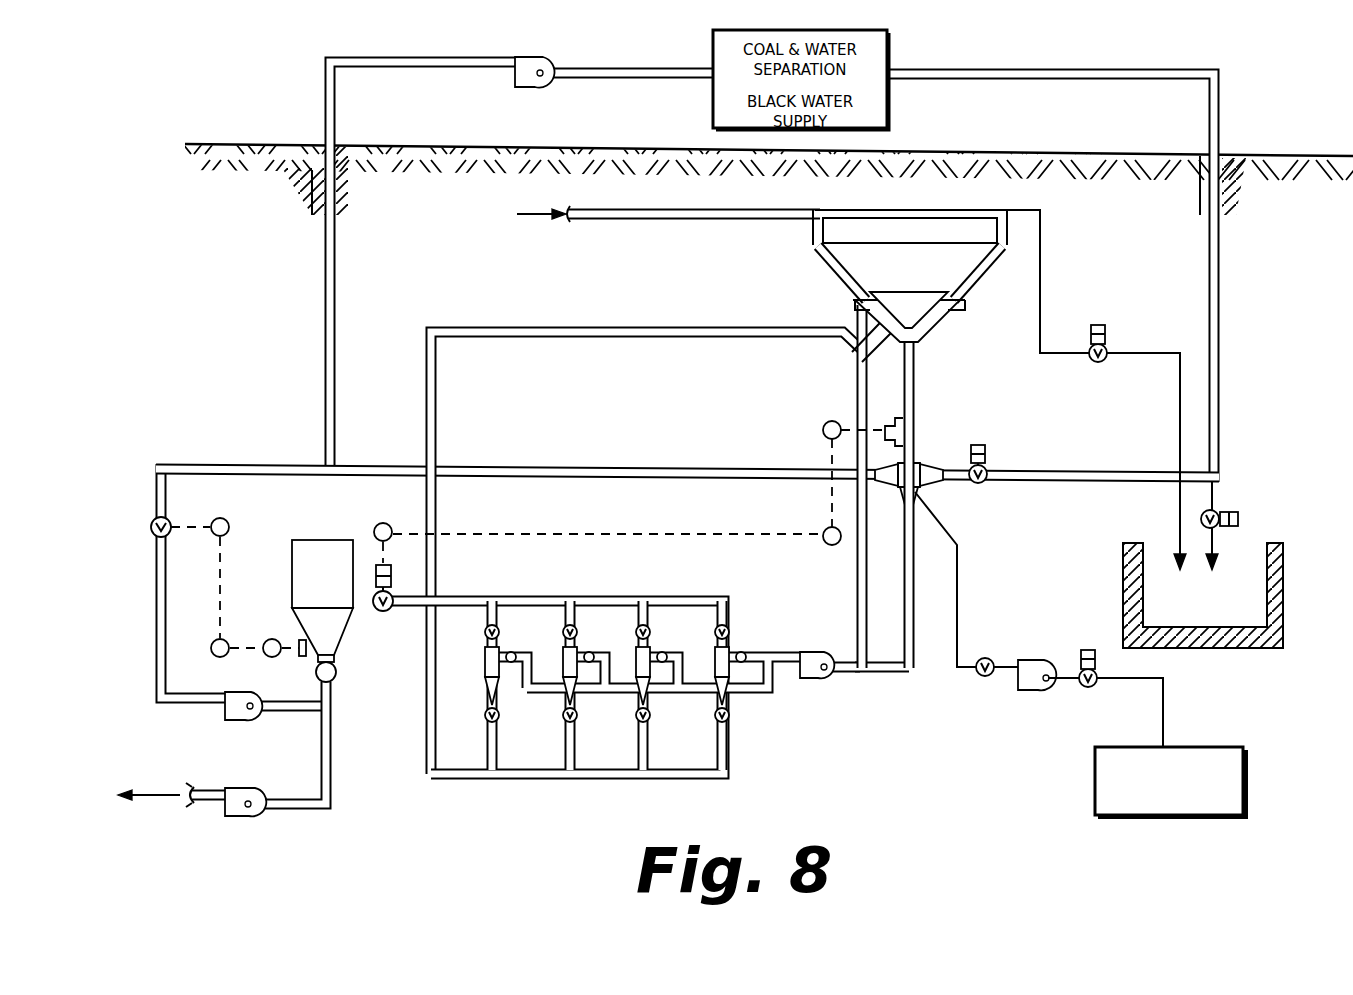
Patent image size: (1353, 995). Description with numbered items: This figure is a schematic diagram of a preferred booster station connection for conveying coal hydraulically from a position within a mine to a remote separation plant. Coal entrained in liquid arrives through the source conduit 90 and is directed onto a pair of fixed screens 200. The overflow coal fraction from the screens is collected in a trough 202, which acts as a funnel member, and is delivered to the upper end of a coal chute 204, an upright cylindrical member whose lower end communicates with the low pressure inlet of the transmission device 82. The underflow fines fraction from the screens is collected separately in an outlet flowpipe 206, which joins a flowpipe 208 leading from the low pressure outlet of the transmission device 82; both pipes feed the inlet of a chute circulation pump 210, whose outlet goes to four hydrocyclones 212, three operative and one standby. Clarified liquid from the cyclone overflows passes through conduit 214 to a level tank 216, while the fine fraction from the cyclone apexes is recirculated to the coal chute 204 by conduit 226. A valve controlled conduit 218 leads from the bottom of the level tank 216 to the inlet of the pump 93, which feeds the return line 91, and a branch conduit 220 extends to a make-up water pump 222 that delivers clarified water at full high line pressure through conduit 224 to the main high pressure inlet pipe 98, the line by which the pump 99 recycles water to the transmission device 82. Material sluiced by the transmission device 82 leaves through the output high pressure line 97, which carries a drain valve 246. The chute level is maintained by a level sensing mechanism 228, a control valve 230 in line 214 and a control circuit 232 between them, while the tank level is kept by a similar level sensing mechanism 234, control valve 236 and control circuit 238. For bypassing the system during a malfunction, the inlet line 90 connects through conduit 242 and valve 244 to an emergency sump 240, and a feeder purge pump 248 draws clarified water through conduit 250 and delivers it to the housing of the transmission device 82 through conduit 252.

The transmission device 82 is at (925, 462).
The conduit 90 is at (676, 224).
The return line 91 is at (196, 806).
The pump 93 is at (258, 818).
The pipe 97 is at (1222, 105).
The pipe 98 is at (337, 258).
The pump 99 is at (548, 60).
The fixed screens 200 is at (836, 278).
The trough 202 is at (858, 350).
The coal chute 204 is at (915, 396).
The outlet flowpipe 206 is at (860, 585).
The flowpipe 208 is at (892, 672).
The chute circulation pump 210 is at (812, 681).
The hydrocyclones 212 is at (713, 662).
The conduit 214 is at (605, 600).
The level tank 216 is at (296, 572).
The valve controlled conduit 218 is at (338, 678).
The branch conduit 220 is at (278, 713).
The make-up water pump 222 is at (262, 684).
The conduit 224 is at (158, 612).
The conduit 226 is at (436, 406).
The level sensing mechanism 228 is at (885, 425).
The control valve 230 is at (392, 586).
The control circuit 232 is at (738, 532).
The level sensing mechanism 234 is at (300, 645).
The control valve 236 is at (170, 519).
The control circuit 238 is at (222, 574).
The emergency sump 240 is at (1276, 648).
The conduit 242 is at (1066, 350).
The valve 244 is at (1106, 346).
The drain valve 246 is at (1217, 512).
The feeder purge pump 248 is at (1042, 660).
The conduit 250 is at (1166, 700).
The conduit 252 is at (958, 592).